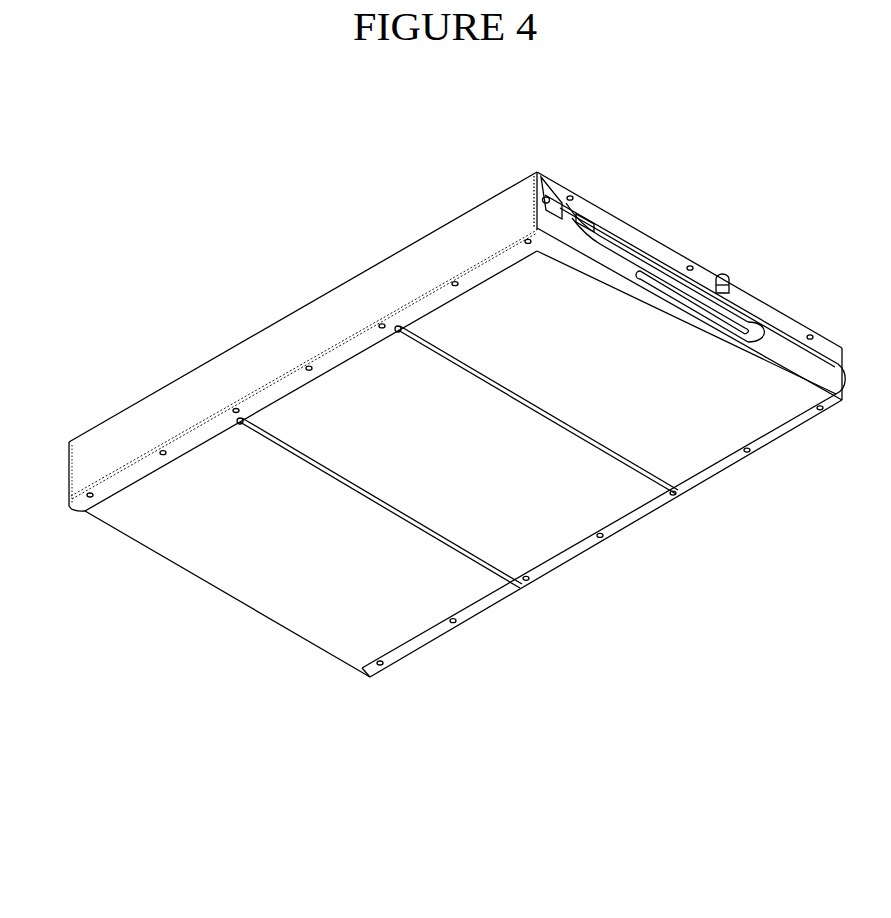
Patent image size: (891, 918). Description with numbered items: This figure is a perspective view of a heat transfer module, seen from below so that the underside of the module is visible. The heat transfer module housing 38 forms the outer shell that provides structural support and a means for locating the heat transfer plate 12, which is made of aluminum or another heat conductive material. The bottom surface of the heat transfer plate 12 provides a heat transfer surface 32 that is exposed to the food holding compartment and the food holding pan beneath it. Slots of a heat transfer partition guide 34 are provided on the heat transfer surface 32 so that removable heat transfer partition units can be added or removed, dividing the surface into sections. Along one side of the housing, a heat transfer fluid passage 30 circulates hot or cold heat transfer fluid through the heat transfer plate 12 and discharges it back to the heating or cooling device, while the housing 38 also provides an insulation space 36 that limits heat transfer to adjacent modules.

The heat transfer plate 12 is at (783, 370).
The heat transfer fluid passage 30 is at (718, 292).
The heat transfer surface 32 is at (285, 548).
The heat transfer partition guide 34 is at (322, 472).
The insulation space 36 is at (600, 248).
The heat transfer module housing 38 is at (370, 295).